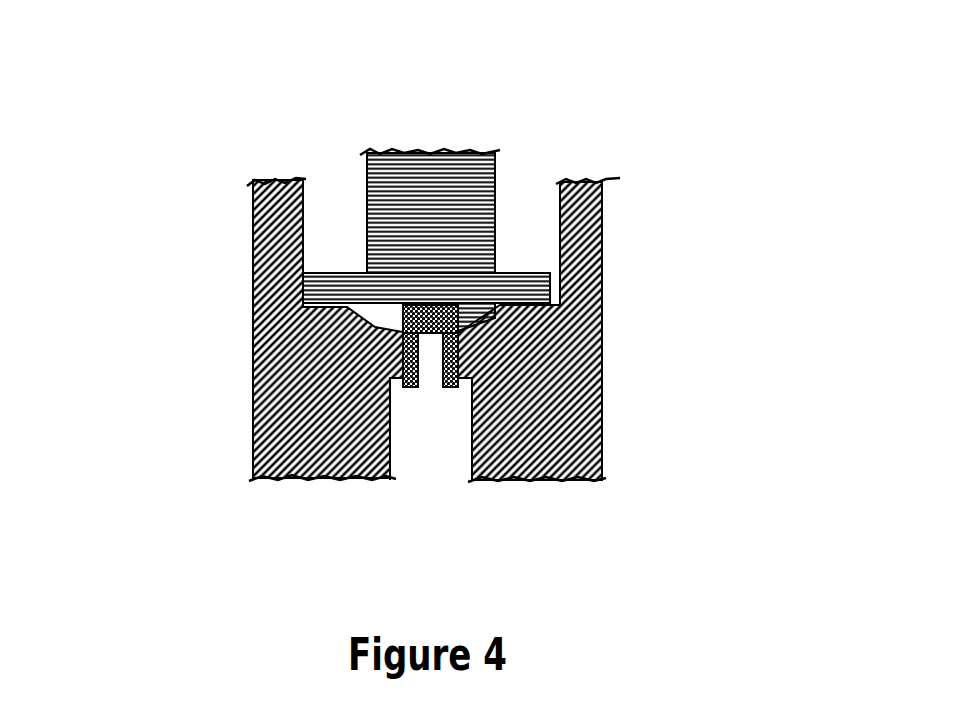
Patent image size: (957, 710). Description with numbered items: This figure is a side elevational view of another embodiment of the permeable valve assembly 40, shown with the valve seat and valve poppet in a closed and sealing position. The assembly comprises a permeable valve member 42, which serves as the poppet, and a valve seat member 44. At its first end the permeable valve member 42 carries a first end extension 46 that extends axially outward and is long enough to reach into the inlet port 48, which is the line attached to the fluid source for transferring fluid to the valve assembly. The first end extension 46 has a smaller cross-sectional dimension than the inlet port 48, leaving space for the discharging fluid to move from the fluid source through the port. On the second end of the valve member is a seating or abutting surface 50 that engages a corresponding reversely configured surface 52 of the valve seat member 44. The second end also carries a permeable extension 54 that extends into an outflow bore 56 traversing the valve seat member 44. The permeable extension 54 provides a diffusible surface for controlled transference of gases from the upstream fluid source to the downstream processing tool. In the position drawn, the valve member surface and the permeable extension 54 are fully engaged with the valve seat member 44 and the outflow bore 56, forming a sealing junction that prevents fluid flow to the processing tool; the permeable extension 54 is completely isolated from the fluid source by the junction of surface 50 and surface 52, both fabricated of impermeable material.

The permeable valve assembly 40 is at (192, 180).
The permeable valve member 42 is at (437, 195).
The valve seat member 44 is at (305, 400).
The first end extension 46 is at (467, 157).
The inlet port 48 is at (345, 200).
The seating or abutting surface 50 is at (495, 320).
The reversely configured surface 52 is at (490, 316).
The permeable extension 54 is at (458, 362).
The outflow bore 56 is at (423, 450).